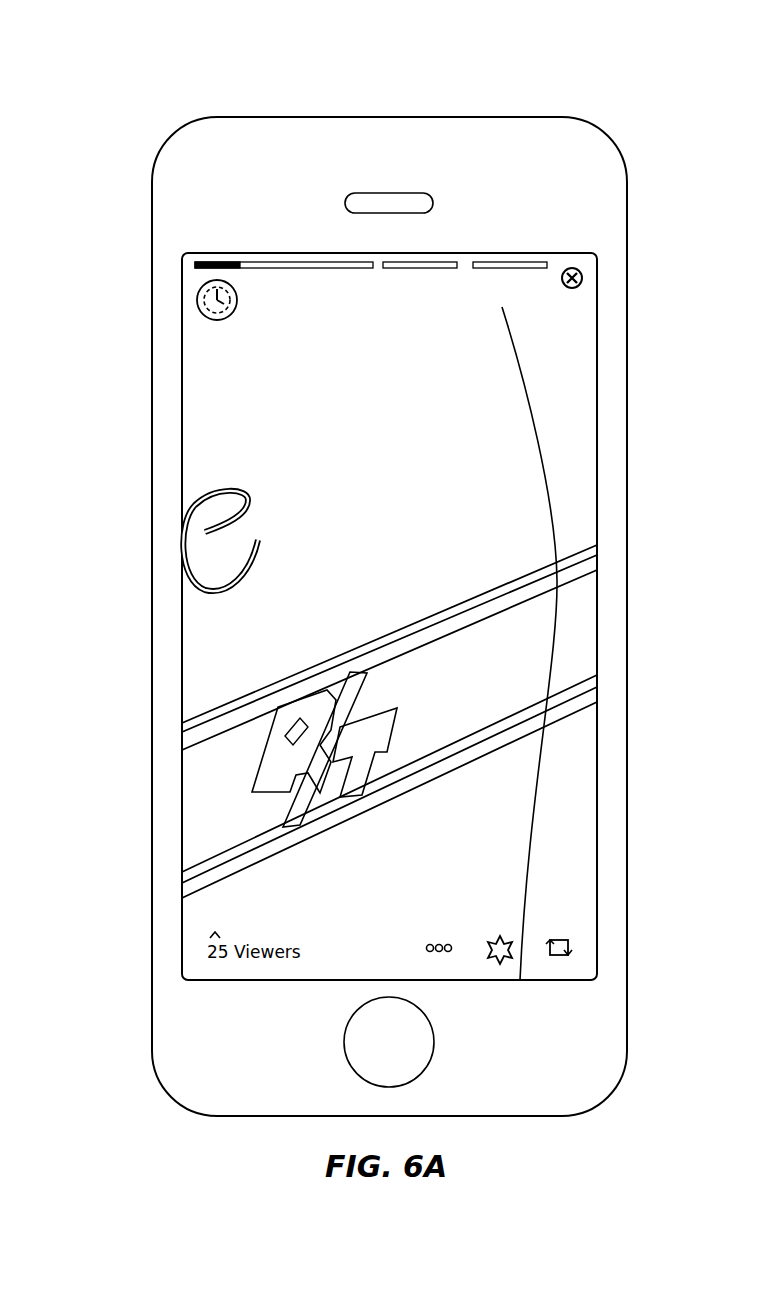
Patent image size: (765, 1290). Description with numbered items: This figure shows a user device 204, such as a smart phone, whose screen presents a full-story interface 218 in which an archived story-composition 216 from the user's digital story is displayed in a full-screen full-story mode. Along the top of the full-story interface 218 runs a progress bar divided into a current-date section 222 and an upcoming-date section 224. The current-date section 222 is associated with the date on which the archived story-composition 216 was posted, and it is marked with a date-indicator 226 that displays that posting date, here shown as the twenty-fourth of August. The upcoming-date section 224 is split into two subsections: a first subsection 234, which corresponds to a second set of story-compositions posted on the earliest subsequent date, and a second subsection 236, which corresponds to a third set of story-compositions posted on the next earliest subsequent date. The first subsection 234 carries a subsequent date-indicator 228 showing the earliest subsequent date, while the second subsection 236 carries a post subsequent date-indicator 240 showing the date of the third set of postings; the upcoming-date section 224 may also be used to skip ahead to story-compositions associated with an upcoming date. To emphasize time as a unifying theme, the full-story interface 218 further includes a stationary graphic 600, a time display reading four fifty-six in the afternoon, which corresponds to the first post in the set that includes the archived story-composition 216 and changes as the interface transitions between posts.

The user device 204 is at (128, 74).
The archived story-composition 216 is at (325, 800).
The full-story interface 218 is at (190, 550).
The current-date section 222 is at (218, 262).
The upcoming-date section 224 is at (467, 207).
The date-indicator 226 is at (277, 336).
The subsequent date-indicator 228 is at (398, 322).
The first subsection 234 is at (437, 265).
The second subsection 236 is at (512, 236).
The post subsequent date-indicator 240 is at (481, 322).
The stationary graphic 600 is at (582, 880).